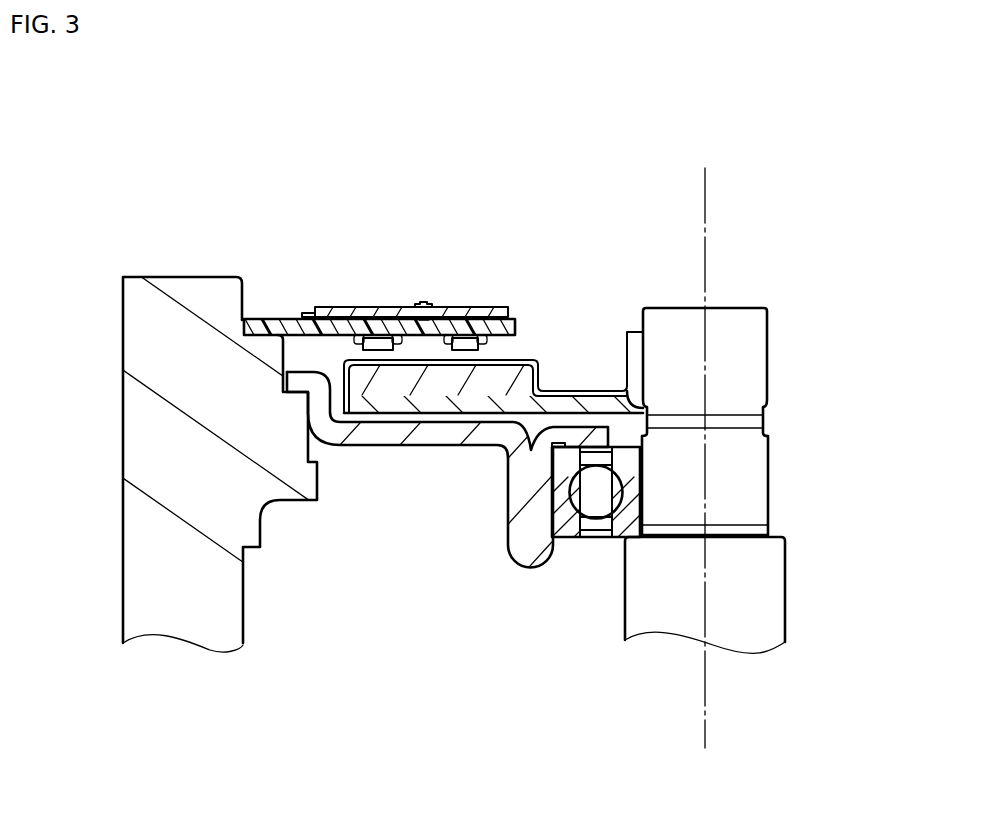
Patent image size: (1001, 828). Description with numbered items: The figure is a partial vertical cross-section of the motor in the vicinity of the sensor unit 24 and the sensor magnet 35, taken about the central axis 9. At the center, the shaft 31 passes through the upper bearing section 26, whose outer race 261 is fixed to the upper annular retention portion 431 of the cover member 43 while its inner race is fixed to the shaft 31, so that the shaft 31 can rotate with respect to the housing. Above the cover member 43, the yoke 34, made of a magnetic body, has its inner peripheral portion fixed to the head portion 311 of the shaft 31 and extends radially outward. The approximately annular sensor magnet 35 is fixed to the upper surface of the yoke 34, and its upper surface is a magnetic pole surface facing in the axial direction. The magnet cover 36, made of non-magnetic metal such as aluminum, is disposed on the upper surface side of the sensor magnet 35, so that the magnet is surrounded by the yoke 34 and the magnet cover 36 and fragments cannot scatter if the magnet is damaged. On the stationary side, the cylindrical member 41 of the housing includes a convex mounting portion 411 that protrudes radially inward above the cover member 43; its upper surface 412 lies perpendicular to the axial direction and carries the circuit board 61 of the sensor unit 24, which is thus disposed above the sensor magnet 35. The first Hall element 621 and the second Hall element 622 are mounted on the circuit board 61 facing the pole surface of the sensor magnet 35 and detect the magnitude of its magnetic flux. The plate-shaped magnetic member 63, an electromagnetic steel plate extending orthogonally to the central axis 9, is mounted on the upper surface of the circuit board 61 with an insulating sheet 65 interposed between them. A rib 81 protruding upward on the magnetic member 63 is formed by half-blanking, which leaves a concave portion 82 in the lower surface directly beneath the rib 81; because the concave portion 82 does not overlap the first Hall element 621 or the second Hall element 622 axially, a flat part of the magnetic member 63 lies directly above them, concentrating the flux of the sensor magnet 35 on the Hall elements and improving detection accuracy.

The central axis 9 is at (705, 197).
The sensor unit 24 is at (387, 292).
The upper bearing section 26 is at (688, 705).
The outer race 261 is at (565, 518).
The shaft 31 is at (762, 592).
The head portion 311 is at (753, 355).
The yoke 34 is at (643, 438).
The sensor magnet 35 is at (507, 377).
The magnet cover 36 is at (581, 385).
The cylindrical member 41 is at (218, 592).
The convex mounting portion 411 is at (265, 350).
The upper surface 412 is at (255, 318).
The cover member 43 is at (335, 424).
The upper annular retention portion 431 is at (522, 552).
The circuit board 61 is at (355, 328).
The magnetic member 63 is at (480, 312).
The insulating sheet 65 is at (302, 315).
The rib 81 is at (422, 317).
The concave portion 82 is at (413, 372).
The first Hall element 621 is at (467, 343).
The second Hall element 622 is at (378, 343).